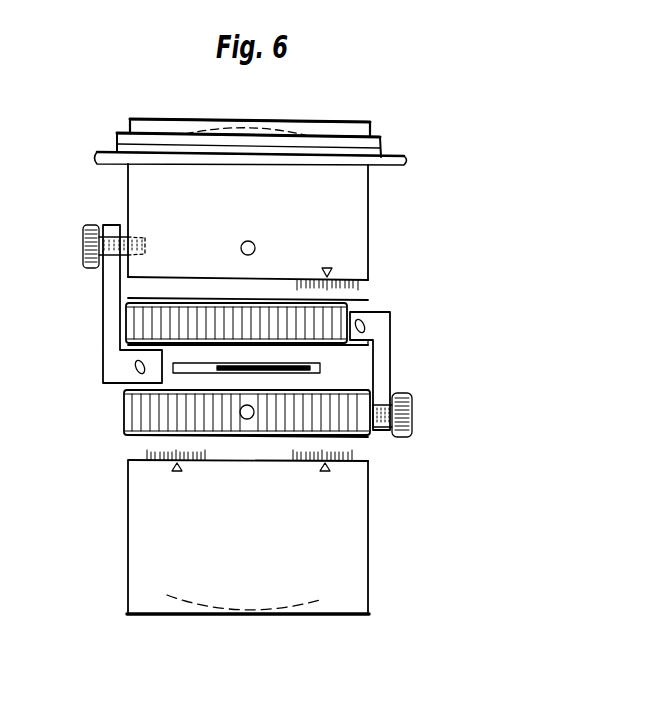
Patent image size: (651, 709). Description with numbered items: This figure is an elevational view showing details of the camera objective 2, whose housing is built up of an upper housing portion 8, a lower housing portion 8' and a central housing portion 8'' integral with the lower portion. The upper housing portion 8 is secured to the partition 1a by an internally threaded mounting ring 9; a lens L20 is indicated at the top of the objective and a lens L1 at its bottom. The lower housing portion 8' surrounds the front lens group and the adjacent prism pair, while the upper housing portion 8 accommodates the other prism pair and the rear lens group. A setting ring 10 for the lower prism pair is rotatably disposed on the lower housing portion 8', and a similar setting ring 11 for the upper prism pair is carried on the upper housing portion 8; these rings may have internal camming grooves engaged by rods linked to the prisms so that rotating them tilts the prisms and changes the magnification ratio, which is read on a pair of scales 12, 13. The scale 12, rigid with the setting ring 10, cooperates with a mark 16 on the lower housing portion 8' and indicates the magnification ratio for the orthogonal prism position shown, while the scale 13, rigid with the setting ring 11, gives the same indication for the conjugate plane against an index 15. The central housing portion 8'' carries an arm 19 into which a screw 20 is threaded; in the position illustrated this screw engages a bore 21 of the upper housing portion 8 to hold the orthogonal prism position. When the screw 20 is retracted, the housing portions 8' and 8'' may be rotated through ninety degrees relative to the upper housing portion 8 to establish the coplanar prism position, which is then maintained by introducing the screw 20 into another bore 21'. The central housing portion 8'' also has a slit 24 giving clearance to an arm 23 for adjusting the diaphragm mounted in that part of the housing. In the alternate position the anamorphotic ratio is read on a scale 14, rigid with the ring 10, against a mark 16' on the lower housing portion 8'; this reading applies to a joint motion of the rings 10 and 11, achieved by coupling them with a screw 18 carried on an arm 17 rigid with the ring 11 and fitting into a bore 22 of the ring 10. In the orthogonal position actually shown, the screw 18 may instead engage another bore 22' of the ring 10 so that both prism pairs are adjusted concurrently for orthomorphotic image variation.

The objective 2 is at (150, 628).
The upper housing portion 8 is at (271, 222).
The lower housing portion 8' is at (268, 537).
The central housing portion 8'' is at (320, 367).
The internally threaded mounting ring 9 is at (355, 147).
The partition 1a is at (408, 161).
The setting ring 10 is at (260, 430).
The setting ring 11 is at (155, 325).
The scale 12 is at (370, 456).
The scale 13 is at (355, 283).
The scale 14 is at (148, 454).
The upper index mark 15 is at (332, 268).
The mark 16 is at (382, 483).
The mark 16' is at (127, 489).
The arm 17 is at (378, 314).
The screw 18 is at (412, 416).
The arm 19 is at (112, 282).
The screw 20 is at (83, 237).
The bore 21 is at (134, 223).
The bore 21' is at (234, 224).
The bore 22 is at (236, 458).
The bore 22' is at (446, 435).
The arm 23 is at (268, 360).
The slit 24 is at (308, 374).
The front lens L20 is at (230, 122).
The rear lens L1 is at (285, 609).